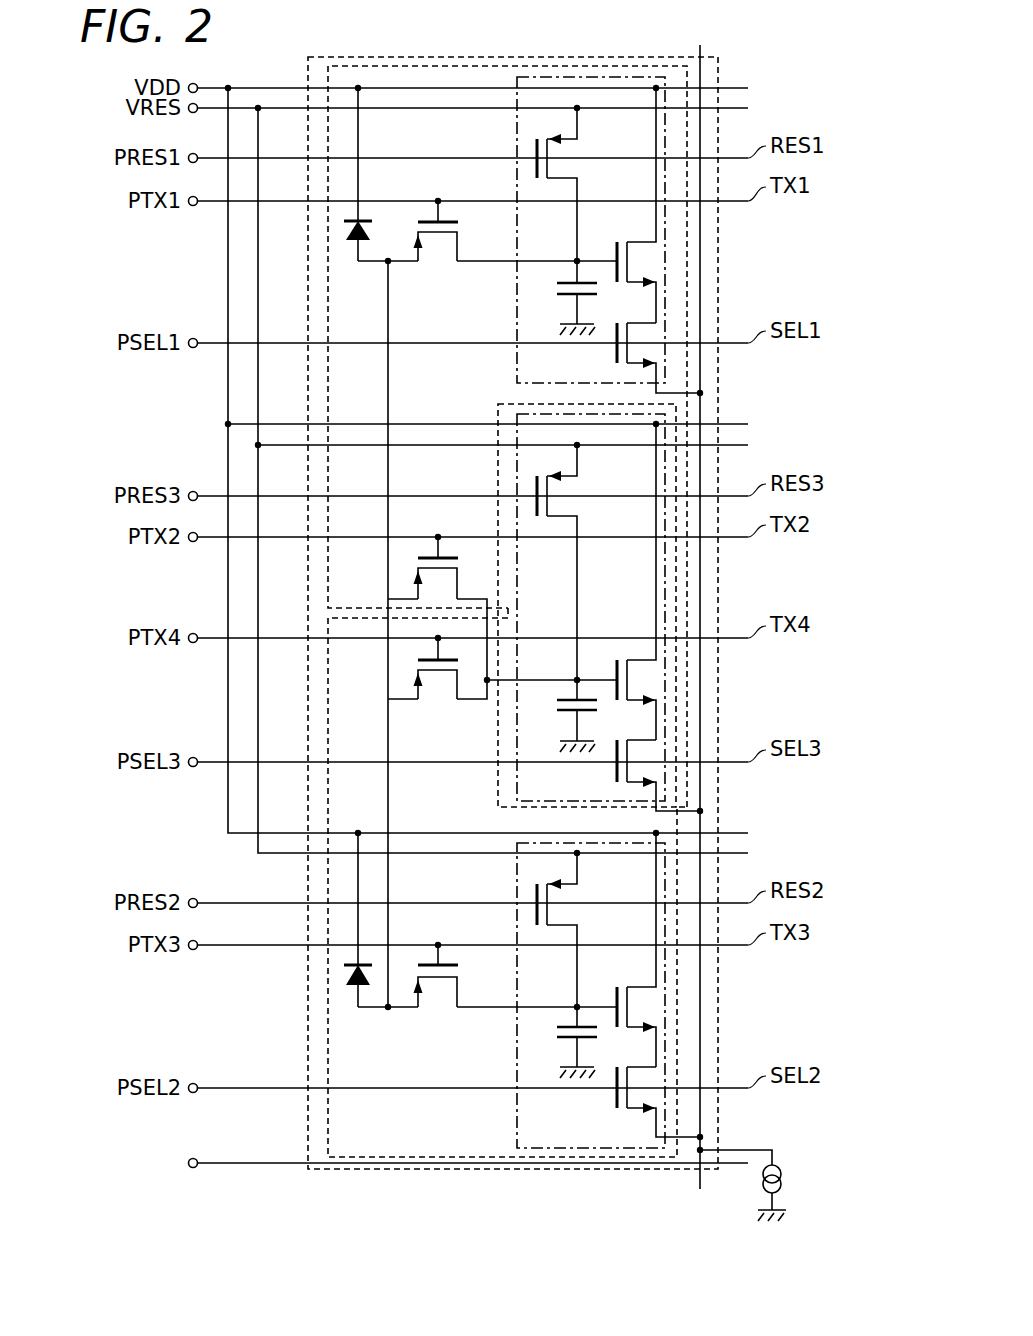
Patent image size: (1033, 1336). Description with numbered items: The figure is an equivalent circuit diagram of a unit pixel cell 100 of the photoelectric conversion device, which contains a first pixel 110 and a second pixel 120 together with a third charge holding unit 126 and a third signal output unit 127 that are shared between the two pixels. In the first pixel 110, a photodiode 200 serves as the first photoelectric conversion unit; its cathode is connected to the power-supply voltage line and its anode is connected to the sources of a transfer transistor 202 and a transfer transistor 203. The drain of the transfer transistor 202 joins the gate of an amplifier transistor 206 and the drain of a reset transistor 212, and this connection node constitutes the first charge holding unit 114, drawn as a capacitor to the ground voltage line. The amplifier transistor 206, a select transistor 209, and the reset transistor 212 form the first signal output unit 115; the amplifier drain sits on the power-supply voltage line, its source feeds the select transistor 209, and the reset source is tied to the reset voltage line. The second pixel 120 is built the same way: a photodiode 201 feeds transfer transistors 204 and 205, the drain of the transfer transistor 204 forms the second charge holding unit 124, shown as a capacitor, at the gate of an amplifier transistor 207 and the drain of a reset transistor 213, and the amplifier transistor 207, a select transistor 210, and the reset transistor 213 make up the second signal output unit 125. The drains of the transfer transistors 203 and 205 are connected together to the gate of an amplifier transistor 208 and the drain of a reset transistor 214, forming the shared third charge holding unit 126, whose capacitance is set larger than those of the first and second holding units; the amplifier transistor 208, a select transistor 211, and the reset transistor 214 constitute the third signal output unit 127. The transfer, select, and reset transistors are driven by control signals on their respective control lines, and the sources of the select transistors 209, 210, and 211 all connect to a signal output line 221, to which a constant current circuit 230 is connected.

The unit pixel cell 100 is at (400, 57).
The first pixel 110 is at (328, 465).
The second pixel 120 is at (328, 718).
The first signal output unit 115 is at (665, 262).
The third signal output unit 127 is at (665, 568).
The second signal output unit 125 is at (665, 1033).
The photodiode 200 is at (340, 233).
The photodiode 201 is at (340, 975).
The transfer transistor 202 is at (437, 247).
The transfer transistor 203 is at (413, 580).
The transfer transistor 204 is at (437, 992).
The transfer transistor 205 is at (437, 684).
The amplifier transistor 206 is at (640, 242).
The amplifier transistor 207 is at (640, 987).
The amplifier transistor 208 is at (640, 660).
The select transistor 209 is at (613, 353).
The select transistor 210 is at (613, 1108).
The select transistor 211 is at (613, 773).
The reset transistor 212 is at (535, 152).
The reset transistor 213 is at (533, 890).
The reset transistor 214 is at (533, 482).
The first charge holding unit 114 is at (563, 282).
The second charge holding unit 124 is at (563, 1027).
The third charge holding unit 126 is at (563, 700).
The signal output line 221 is at (698, 1183).
The constant current circuit 230 is at (775, 1165).